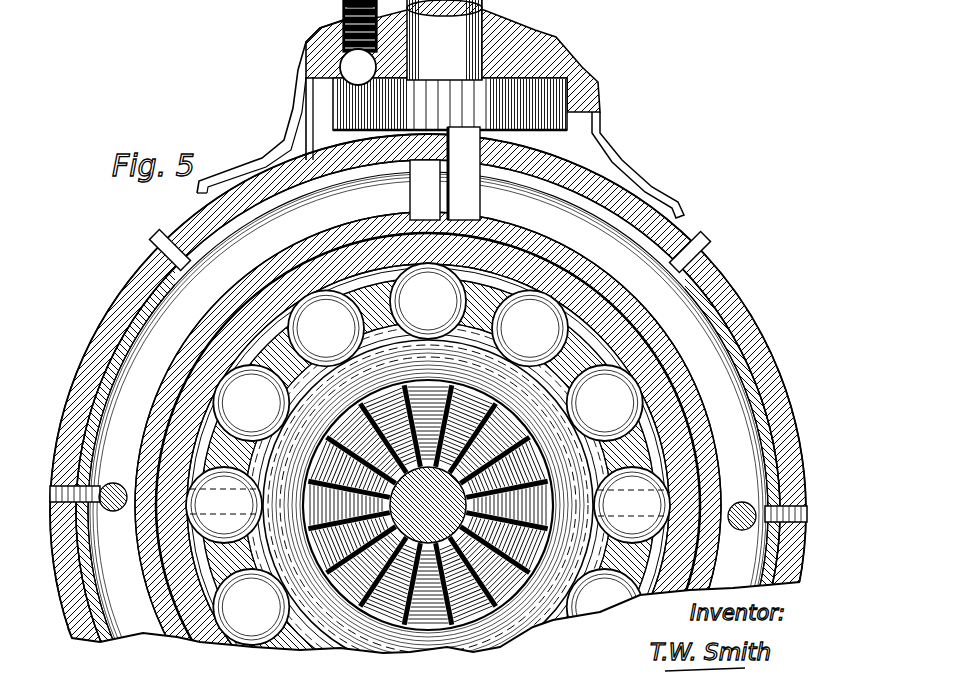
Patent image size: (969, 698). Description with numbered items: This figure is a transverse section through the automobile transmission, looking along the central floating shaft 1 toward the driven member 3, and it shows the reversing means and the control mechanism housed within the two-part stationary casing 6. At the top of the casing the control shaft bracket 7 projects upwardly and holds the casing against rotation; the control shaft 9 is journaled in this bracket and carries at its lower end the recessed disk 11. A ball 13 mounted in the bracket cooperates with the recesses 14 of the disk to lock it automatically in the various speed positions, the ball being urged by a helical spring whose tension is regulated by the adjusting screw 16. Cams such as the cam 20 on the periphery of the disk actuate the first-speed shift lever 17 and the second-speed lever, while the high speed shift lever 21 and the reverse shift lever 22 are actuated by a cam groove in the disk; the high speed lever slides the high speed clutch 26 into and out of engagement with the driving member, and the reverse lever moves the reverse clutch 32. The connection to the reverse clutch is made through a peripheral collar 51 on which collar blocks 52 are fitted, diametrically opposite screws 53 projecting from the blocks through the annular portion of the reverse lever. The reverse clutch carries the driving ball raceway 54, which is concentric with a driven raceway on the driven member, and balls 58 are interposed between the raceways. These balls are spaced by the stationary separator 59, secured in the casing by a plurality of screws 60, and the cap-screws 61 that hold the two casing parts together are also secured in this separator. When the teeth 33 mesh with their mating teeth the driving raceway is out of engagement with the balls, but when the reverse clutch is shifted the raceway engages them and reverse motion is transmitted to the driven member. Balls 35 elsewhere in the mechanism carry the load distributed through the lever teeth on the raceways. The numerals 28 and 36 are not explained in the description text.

The central floating shaft 1 is at (492, 622).
The driven member 3 is at (277, 233).
The stationary casing 6 is at (823, 8).
The control shaft bracket 7 is at (600, 100).
The control shaft 9 is at (485, 25).
The recessed disk 11 is at (535, 78).
The ball 13 is at (342, 62).
The recesses 14 is at (380, 92).
The adjusting screw 16 is at (340, 12).
The first-speed shift lever 17 is at (374, 5).
The cam 20 is at (580, 80).
The high speed shift lever 21 is at (415, 197).
The reverse shift lever 22 is at (476, 200).
The high speed clutch 26 is at (555, 5).
The bracket 28 is at (757, 0).
The reverse clutch 32 is at (370, 632).
The teeth 33 is at (540, 620).
The balls 35 is at (690, 0).
The lug 36 is at (605, 5).
The peripheral collar 51 is at (452, 648).
The collar blocks 52 is at (527, 633).
The screws 53 is at (182, 646).
The driving ball raceway 54 is at (628, 620).
The balls 58 is at (746, 302).
The stationary separator 59 is at (122, 332).
The screws 60 is at (157, 247).
The cap-screws 61 is at (90, 420).